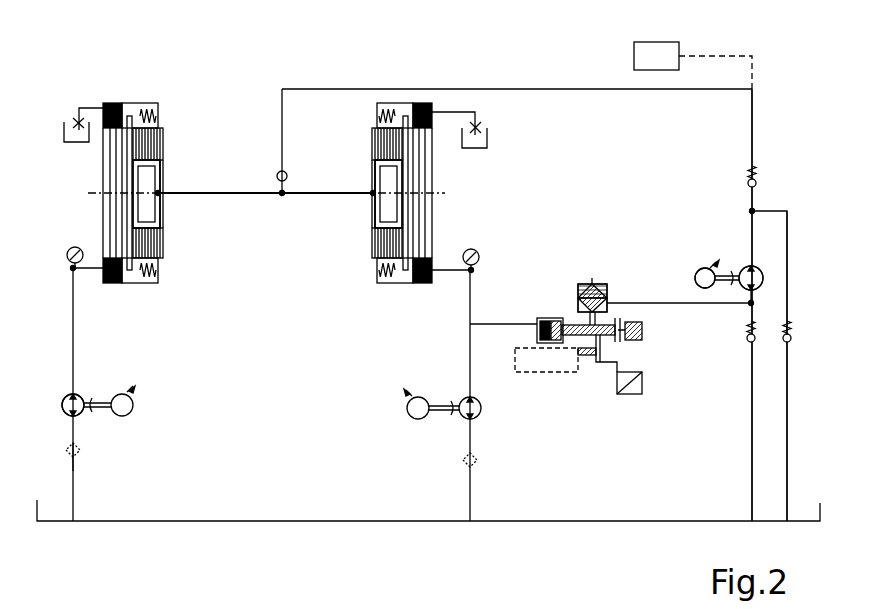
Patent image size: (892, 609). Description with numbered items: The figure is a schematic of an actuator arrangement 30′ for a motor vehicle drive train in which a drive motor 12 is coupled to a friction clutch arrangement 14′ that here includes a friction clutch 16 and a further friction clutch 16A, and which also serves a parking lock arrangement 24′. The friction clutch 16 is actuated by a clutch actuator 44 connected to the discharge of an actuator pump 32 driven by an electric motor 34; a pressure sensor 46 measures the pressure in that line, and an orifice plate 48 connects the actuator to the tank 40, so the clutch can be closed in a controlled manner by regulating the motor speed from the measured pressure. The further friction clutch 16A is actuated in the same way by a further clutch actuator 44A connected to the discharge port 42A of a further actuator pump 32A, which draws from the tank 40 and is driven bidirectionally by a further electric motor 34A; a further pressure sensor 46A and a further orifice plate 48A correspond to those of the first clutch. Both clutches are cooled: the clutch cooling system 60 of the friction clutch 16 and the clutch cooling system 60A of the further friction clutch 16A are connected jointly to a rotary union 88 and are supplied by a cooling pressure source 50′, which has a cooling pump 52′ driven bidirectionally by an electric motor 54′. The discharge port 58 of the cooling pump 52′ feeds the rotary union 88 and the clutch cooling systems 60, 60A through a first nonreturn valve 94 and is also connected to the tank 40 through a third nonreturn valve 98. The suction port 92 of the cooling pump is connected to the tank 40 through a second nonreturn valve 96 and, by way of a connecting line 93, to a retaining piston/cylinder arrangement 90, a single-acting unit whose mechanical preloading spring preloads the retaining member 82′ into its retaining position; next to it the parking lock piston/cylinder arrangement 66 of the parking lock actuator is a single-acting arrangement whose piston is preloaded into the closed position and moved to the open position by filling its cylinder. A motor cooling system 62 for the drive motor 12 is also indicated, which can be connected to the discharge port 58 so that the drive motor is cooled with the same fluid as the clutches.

The drive motor 12 is at (634, 57).
The friction clutch arrangement 14′ is at (425, 75).
The friction clutch 16 is at (375, 245).
The further friction clutch 16A is at (158, 242).
The parking lock arrangement 24′ is at (624, 257).
The actuator arrangement 30′ is at (775, 85).
The actuator pump 32 is at (481, 412).
The further actuator pump 32A is at (80, 412).
The electric motor 34 is at (413, 418).
The further electric motor 34A is at (135, 405).
The tank 40 is at (540, 523).
The discharge port 42A is at (75, 395).
The clutch actuator 44 is at (402, 193).
The further clutch actuator 44A is at (110, 283).
The pressure sensor 46 is at (471, 248).
The further pressure sensor 46A is at (76, 247).
The orifice plate 48 is at (482, 128).
The further orifice plate 48A is at (78, 122).
The cooling pressure source 50′ is at (802, 243).
The cooling pump 52′ is at (764, 277).
The electric motor 54′ is at (695, 278).
The discharge port 58 is at (749, 265).
The clutch cooling system 60 is at (362, 204).
The further clutch cooling system 60A is at (172, 201).
The motor cooling system 62 is at (715, 56).
The parking lock piston/cylinder arrangement 66 is at (620, 348).
The retaining member 82′ is at (585, 320).
The rotary union 88 is at (277, 176).
The retaining piston/cylinder arrangement 90 is at (580, 295).
The suction port 92 is at (756, 303).
The connecting line 93 is at (680, 304).
The first nonreturn valve 94 is at (758, 181).
The second nonreturn valve 96 is at (749, 341).
The third nonreturn valve 98 is at (792, 336).